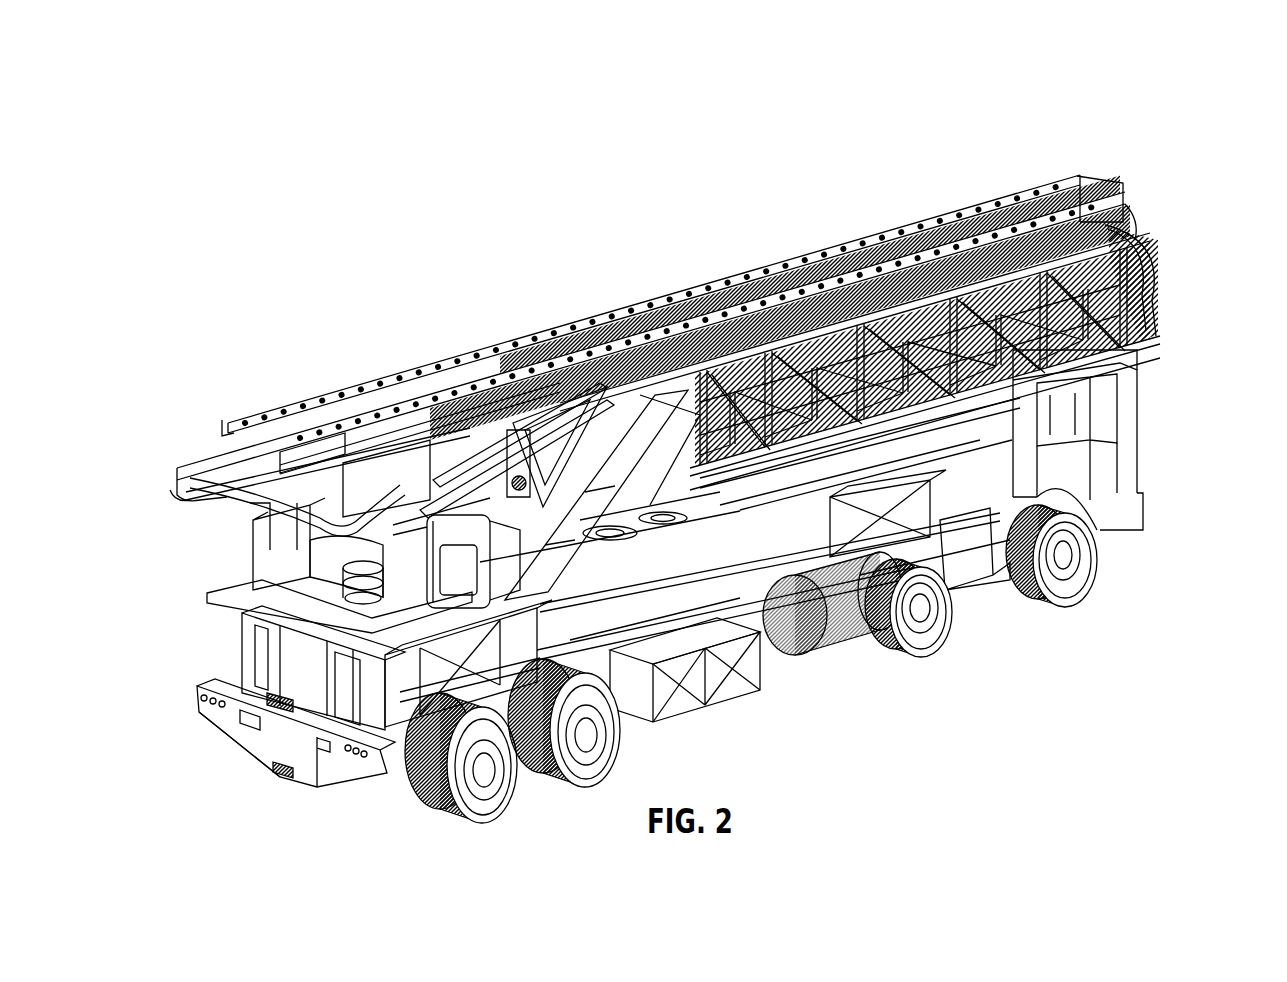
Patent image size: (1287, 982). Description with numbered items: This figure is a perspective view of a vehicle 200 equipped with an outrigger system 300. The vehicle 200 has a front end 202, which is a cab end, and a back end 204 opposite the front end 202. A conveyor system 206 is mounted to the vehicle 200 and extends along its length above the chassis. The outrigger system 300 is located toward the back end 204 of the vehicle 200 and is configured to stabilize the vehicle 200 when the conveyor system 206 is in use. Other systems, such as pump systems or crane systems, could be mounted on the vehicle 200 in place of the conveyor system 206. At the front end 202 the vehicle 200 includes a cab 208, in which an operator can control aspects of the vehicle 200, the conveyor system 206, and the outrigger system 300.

The vehicle 200 is at (238, 145).
The front end 202 is at (1163, 498).
The back end 204 is at (196, 637).
The conveyor system 206 is at (550, 327).
The cab 208 is at (1120, 418).
The outrigger system 300 is at (250, 648).